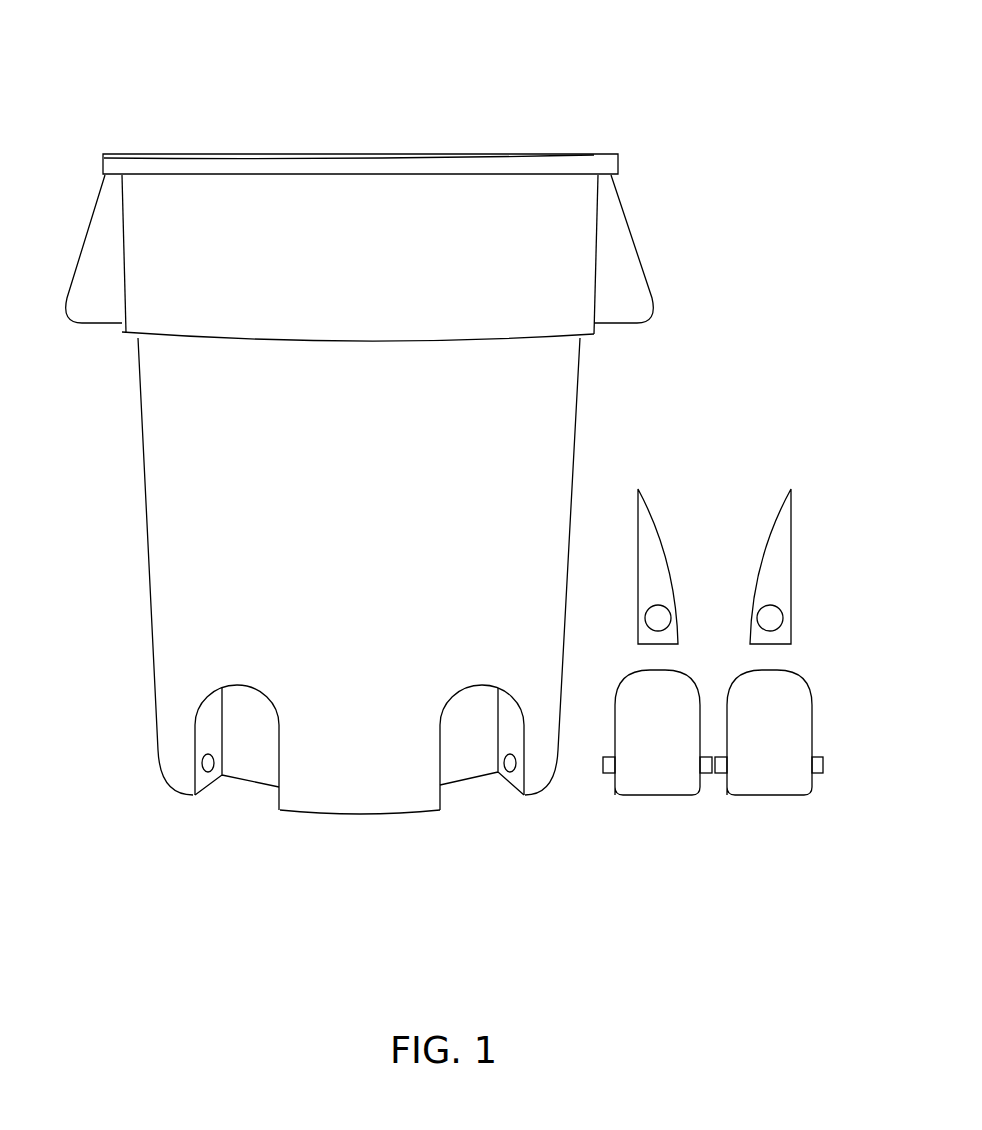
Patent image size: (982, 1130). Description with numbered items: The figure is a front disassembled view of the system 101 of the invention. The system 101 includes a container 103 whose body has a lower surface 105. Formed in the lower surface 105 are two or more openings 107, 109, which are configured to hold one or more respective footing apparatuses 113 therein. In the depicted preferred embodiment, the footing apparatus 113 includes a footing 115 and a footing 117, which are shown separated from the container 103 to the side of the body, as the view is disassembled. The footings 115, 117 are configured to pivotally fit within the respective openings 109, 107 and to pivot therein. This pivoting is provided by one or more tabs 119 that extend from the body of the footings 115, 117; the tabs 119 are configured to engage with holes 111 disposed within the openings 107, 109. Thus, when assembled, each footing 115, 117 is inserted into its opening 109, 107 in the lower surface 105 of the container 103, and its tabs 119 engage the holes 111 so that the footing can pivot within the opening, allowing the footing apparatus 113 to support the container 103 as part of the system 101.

The system 101 is at (117, 50).
The container 103 is at (155, 512).
The lower surface 105 is at (387, 817).
The opening 107 is at (525, 773).
The opening 109 is at (235, 812).
The hole 111 is at (498, 772).
The footing apparatus 113 is at (750, 680).
The footing 115 is at (657, 797).
The footing 117 is at (802, 712).
The tab 119 is at (825, 765).